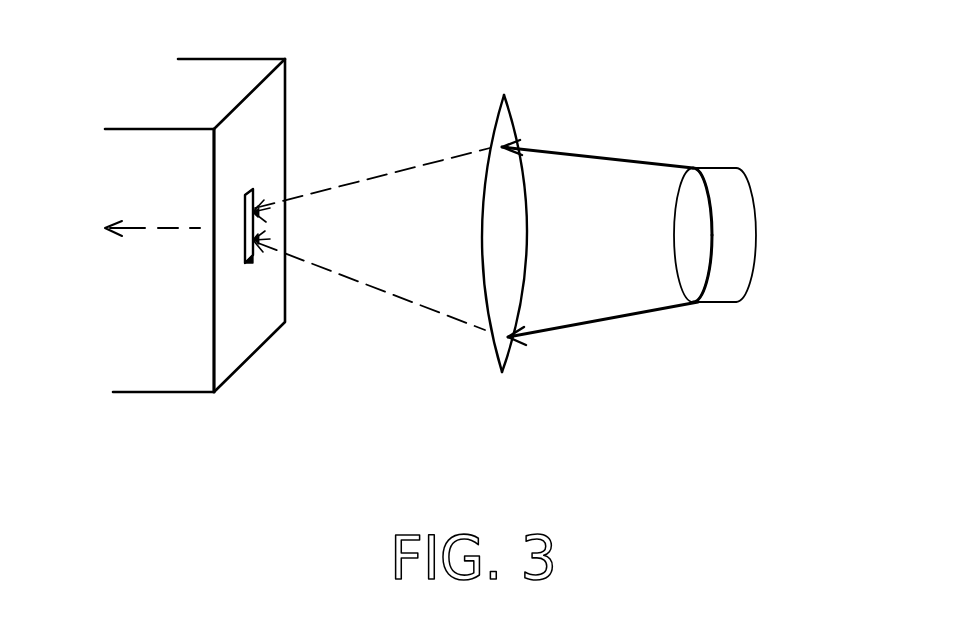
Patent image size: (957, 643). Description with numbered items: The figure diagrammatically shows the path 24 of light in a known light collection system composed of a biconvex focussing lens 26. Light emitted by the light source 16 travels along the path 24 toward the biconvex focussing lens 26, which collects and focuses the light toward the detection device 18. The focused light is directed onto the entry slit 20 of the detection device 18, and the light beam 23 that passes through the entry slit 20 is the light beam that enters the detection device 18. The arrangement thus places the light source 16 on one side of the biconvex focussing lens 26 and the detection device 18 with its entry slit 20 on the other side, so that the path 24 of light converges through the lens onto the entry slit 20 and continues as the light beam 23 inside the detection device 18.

The light source 16 is at (704, 290).
The detection device 18 is at (164, 382).
The entry slit 20 is at (265, 229).
The light beam 23 is at (167, 228).
The path of light 24 is at (622, 158).
The biconvex focussing lens 26 is at (497, 327).